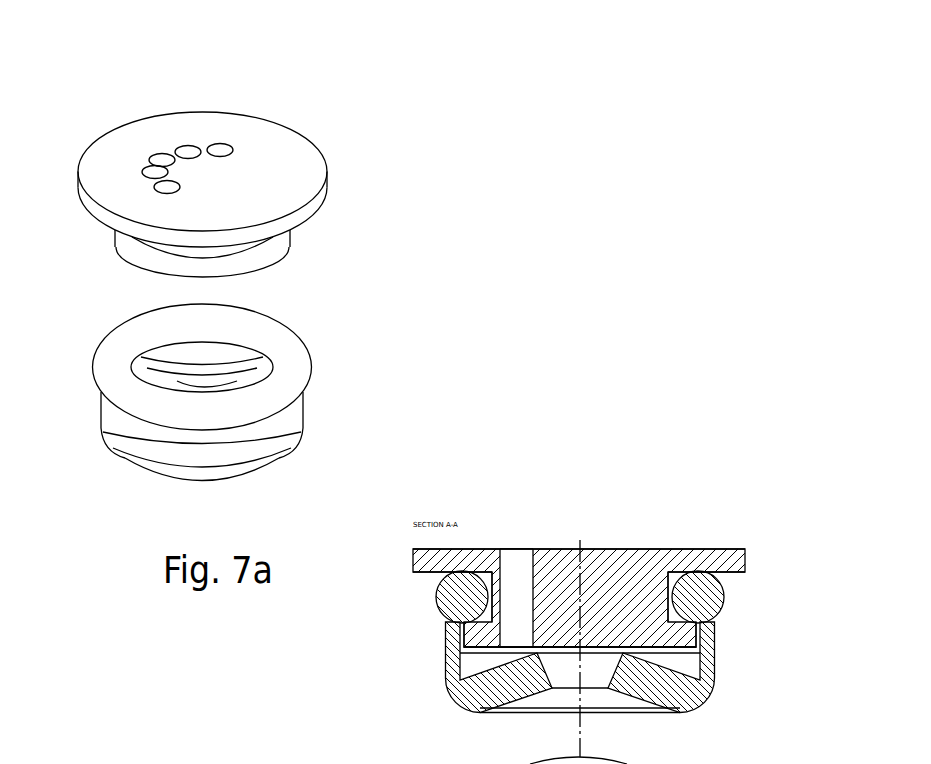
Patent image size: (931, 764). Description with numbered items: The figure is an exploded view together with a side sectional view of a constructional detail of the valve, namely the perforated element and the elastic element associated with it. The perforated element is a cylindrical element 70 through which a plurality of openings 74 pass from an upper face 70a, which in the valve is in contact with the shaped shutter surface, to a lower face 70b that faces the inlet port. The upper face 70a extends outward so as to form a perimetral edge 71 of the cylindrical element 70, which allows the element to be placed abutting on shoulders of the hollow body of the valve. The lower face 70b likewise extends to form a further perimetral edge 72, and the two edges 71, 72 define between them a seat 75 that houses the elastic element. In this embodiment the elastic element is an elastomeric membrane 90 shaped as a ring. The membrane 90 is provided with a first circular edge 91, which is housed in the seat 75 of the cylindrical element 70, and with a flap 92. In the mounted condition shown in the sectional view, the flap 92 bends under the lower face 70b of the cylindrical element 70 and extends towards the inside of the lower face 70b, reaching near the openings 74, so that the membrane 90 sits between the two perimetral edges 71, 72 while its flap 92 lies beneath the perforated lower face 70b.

The cylindrical element 70 is at (94, 108).
The perimetral edge 71 is at (313, 203).
The further perimetral edge 72 is at (257, 255).
The openings 74 is at (222, 147).
The seat 75 is at (667, 583).
The upper face 70a is at (617, 548).
The lower face 70b is at (557, 647).
The elastomeric membrane 90 is at (346, 384).
The first circular edge 91 is at (173, 321).
The flap 92 is at (230, 385).